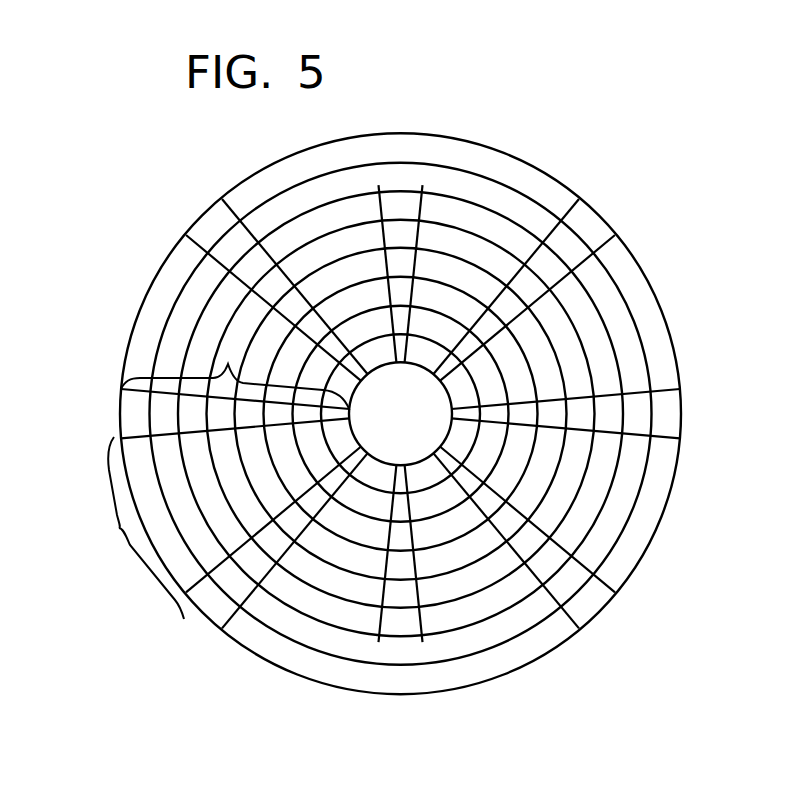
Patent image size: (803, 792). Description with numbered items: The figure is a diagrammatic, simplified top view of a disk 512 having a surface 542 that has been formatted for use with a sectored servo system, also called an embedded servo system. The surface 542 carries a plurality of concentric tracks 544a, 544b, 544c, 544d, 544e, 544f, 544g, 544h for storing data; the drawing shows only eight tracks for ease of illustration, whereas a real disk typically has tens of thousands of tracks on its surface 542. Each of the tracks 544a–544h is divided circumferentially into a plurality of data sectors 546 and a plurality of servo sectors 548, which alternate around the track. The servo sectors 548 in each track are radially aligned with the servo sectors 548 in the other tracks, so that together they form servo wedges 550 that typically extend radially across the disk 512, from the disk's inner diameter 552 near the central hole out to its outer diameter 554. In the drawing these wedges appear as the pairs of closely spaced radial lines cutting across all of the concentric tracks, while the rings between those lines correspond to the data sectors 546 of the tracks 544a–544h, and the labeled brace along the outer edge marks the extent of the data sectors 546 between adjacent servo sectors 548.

The disk 512 is at (267, 167).
The surface 542 is at (272, 268).
The concentric track 544a is at (467, 157).
The concentric track 544b is at (505, 200).
The concentric track 544c is at (503, 237).
The concentric track 544d is at (502, 263).
The concentric track 544e is at (492, 542).
The concentric track 544f is at (465, 520).
The concentric track 544g is at (440, 500).
The concentric track 544h is at (420, 477).
The data sectors 546 is at (120, 528).
The servo sectors 548 is at (216, 633).
The servo wedges 550 is at (228, 365).
The inner diameter 552 is at (366, 441).
The outer diameter 554 is at (270, 660).